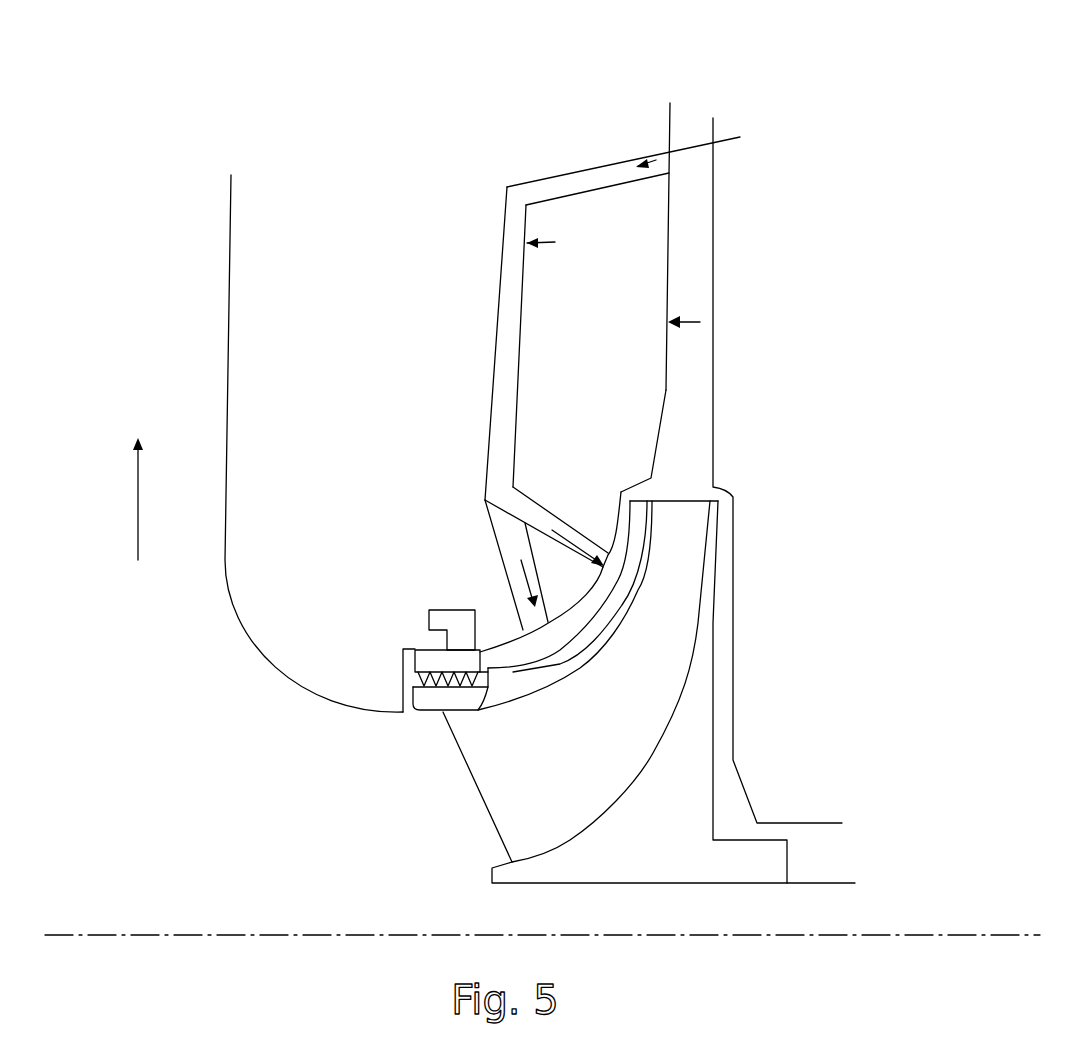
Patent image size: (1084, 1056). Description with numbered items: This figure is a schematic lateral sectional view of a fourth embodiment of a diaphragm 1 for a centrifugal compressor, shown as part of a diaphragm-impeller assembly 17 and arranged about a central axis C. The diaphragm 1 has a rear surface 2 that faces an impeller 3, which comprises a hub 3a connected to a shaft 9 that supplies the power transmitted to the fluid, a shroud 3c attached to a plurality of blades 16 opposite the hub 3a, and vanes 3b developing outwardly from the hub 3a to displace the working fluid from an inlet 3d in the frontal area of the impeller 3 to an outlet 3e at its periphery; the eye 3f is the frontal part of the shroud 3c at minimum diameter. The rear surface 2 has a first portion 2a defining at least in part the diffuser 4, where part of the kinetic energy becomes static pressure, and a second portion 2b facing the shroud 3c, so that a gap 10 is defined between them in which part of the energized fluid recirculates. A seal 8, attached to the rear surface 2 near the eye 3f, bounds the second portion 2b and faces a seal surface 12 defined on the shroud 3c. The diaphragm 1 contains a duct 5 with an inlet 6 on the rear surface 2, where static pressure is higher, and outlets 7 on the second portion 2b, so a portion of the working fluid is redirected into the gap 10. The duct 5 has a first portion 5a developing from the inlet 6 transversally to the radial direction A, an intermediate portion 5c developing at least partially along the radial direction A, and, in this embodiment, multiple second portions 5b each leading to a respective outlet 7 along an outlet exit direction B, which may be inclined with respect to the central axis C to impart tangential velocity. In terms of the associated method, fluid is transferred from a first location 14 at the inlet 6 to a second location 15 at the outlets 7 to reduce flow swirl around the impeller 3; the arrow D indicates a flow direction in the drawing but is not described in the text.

The diaphragm 1 is at (222, 358).
The rear surface 2 is at (700, 322).
The first portion 2a is at (668, 404).
The second portion 2b is at (557, 666).
The impeller 3 is at (800, 868).
The hub 3a is at (753, 842).
The vanes 3b is at (504, 854).
The shroud 3c is at (441, 713).
The inlet 3d is at (470, 712).
The outlet 3e is at (647, 523).
The eye 3f is at (415, 713).
The diffuser 4 is at (713, 369).
The duct 5 is at (555, 242).
The first portion 5a is at (585, 168).
The second portion 5b is at (489, 522).
The intermediate portion 5c is at (495, 352).
The inlet 6 is at (673, 147).
The outlet 7 is at (622, 570).
The seal 8 is at (403, 650).
The shaft 9 is at (833, 883).
The gap 10 is at (513, 672).
The seal surface 12 is at (480, 710).
The first location 14 is at (670, 168).
The second location 15 is at (620, 592).
The blades 16 is at (497, 835).
The diaphragm-impeller assembly 17 is at (164, 209).
The radial direction A is at (137, 500).
The outlet exit direction B is at (597, 538).
The central axis C is at (880, 935).
The flow direction D is at (732, 137).